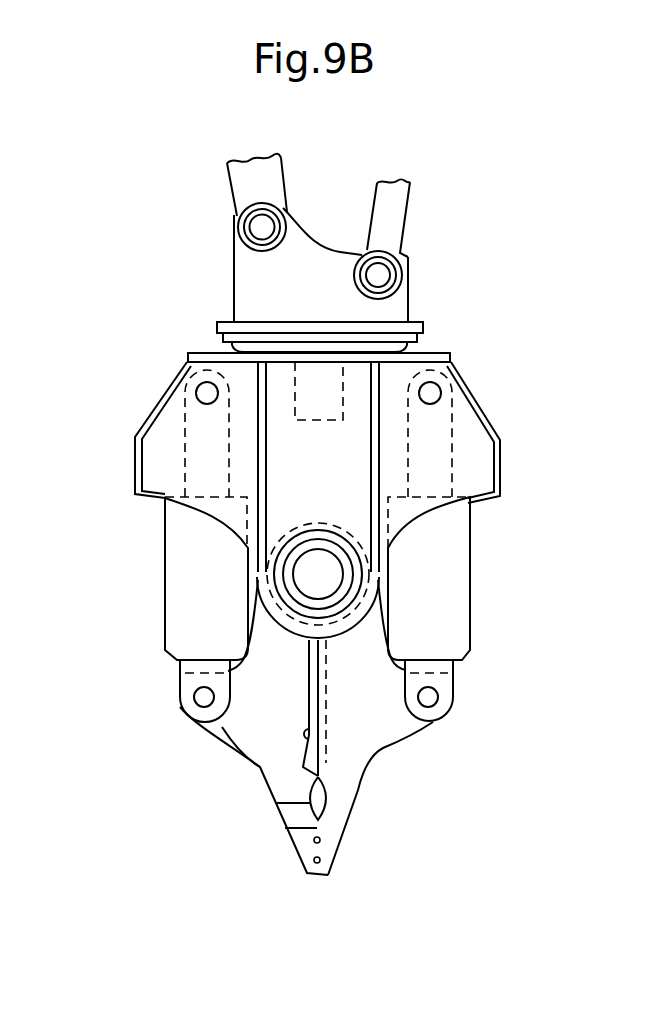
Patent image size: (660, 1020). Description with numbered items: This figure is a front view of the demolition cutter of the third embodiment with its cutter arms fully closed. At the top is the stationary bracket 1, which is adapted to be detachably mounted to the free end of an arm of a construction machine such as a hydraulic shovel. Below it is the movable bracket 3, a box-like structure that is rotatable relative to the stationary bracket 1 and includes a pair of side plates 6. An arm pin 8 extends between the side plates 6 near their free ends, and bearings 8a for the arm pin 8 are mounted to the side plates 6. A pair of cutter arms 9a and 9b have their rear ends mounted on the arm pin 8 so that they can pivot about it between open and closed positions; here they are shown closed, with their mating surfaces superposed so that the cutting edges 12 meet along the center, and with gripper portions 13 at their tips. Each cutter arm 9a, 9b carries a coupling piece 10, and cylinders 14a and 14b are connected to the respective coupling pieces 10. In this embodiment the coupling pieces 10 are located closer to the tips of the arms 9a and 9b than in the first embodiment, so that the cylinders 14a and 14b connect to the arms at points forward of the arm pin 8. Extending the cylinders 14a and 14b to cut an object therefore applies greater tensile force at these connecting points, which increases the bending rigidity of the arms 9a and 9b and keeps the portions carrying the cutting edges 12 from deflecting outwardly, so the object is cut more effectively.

The stationary bracket 1 is at (228, 228).
The movable bracket 3 is at (188, 353).
The side plates 6 is at (167, 430).
The arm pin 8 is at (313, 567).
The bearings 8a is at (287, 590).
The cutter arm 9a is at (280, 755).
The cutter arm 9b is at (360, 752).
The coupling piece 10 is at (222, 727).
The cutting edges 12 is at (312, 740).
The gripper portions 13 is at (318, 870).
The cylinder 14a is at (183, 538).
The cylinder 14b is at (460, 568).